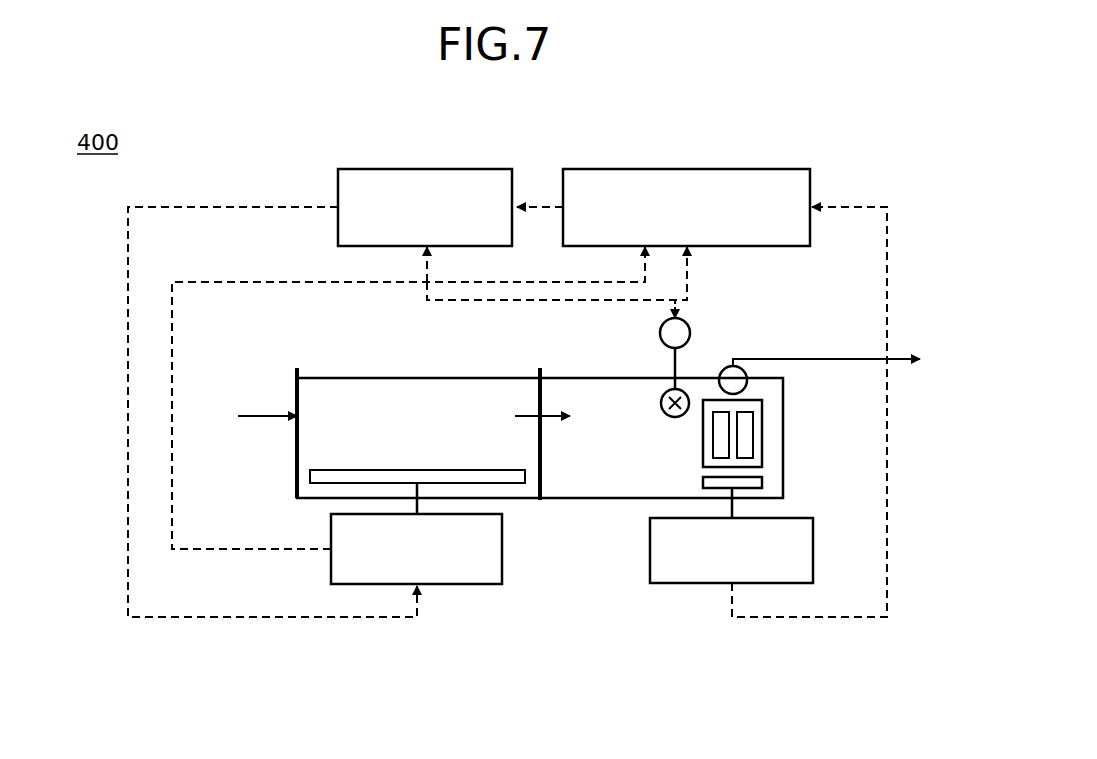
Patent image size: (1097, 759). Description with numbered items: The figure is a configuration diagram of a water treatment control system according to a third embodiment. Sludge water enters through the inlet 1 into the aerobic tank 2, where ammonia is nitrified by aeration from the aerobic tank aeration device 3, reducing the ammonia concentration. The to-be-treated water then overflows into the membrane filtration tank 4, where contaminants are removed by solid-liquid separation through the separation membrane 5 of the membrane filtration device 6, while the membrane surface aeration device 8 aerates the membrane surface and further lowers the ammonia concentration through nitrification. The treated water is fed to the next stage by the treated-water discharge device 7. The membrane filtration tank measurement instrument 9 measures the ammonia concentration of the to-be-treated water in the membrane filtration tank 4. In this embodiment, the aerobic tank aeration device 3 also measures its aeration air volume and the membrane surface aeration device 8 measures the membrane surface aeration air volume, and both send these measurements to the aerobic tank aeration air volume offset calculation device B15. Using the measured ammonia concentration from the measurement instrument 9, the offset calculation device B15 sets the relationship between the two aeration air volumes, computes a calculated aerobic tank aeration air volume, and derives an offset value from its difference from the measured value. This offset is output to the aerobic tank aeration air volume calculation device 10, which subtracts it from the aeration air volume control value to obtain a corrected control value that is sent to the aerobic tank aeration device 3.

The aerobic tank aeration air volume calculation device 10 is at (380, 169).
The aerobic tank aeration air volume offset calculation device B15 is at (640, 169).
The inlet 1 is at (295, 422).
The aerobic tank 2 is at (383, 378).
The aerobic tank aeration device 3 is at (331, 532).
The membrane filtration tank 4 is at (585, 378).
The separation membrane 5 is at (745, 443).
The membrane filtration device 6 is at (703, 467).
The treated-water discharge device 7 is at (745, 362).
The membrane surface aeration device 8 is at (700, 583).
The membrane filtration tank measurement instrument 9 is at (660, 333).